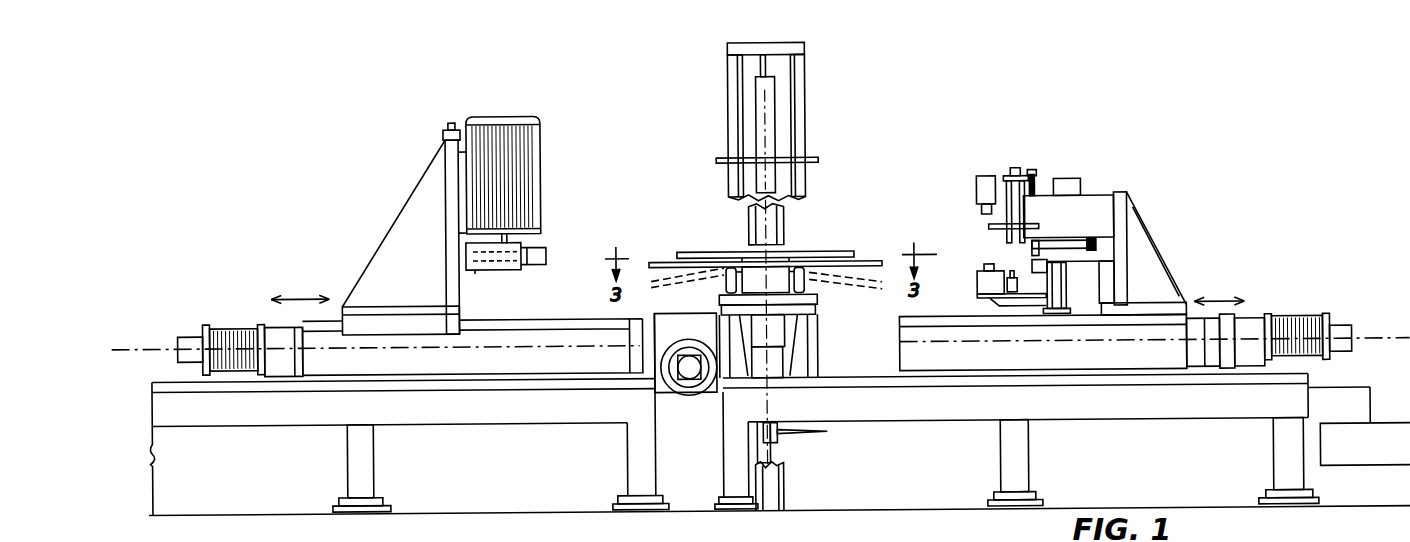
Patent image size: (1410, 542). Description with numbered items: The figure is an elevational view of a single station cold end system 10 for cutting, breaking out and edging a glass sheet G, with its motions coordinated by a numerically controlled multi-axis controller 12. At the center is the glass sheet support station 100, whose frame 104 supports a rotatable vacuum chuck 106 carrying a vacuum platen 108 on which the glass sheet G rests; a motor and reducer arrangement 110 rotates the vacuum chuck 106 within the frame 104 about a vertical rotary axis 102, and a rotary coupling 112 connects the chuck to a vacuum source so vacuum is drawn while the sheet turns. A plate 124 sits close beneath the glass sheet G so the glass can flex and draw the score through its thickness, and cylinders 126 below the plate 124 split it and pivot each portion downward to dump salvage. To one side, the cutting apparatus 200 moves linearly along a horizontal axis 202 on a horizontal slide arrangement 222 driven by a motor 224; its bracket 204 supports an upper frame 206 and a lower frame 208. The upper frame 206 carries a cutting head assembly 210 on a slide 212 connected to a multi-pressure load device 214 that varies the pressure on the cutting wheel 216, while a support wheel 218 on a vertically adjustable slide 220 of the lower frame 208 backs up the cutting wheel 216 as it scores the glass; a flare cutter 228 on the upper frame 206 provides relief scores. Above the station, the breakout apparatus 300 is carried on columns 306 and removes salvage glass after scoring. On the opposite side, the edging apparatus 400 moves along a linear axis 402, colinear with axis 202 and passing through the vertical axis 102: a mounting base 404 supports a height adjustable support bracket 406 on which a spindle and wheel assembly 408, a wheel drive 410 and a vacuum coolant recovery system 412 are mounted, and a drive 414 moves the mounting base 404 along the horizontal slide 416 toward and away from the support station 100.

The single station cold end system 10 is at (907, 88).
The controller 12 is at (1362, 459).
The glass sheet support station 100 is at (834, 324).
The vertical rotary axis 102 is at (758, 447).
The frame 104 is at (822, 358).
The vacuum chuck 106 is at (814, 292).
The vacuum platen 108 is at (741, 255).
The motor and reducer arrangement 110 is at (686, 395).
The rotary coupling 112 is at (796, 437).
The plate 124 is at (866, 261).
The cylinders 126 is at (713, 283).
The glass sheet G is at (690, 251).
The cutting apparatus 200 is at (1188, 128).
The horizontal axis 202 is at (1380, 330).
The bracket 204 is at (1142, 228).
The upper frame 206 is at (1103, 198).
The lower frame 208 is at (1132, 247).
The cutting head assembly 210 is at (978, 186).
The slide 212 is at (1023, 178).
The multi-pressure load device 214 is at (1068, 181).
The cutting wheel 216 is at (983, 211).
The support wheel 218 is at (985, 266).
The vertically adjustable slide 220 is at (1060, 282).
The horizontal slide arrangement 222 is at (956, 318).
The motor 224 is at (1295, 318).
The flare cutter 228 is at (1071, 243).
The breakout apparatus 300 is at (826, 106).
The columns 306 is at (786, 476).
The edging apparatus 400 is at (394, 181).
The linear axis 402 is at (170, 336).
The mounting base 404 is at (388, 241).
The height adjustable support bracket 406 is at (453, 126).
The spindle and wheel assembly 408 is at (548, 253).
The wheel drive 410 is at (542, 138).
The vacuum coolant recovery system 412 is at (480, 270).
The drive 414 is at (238, 321).
The horizontal slide 416 is at (590, 318).